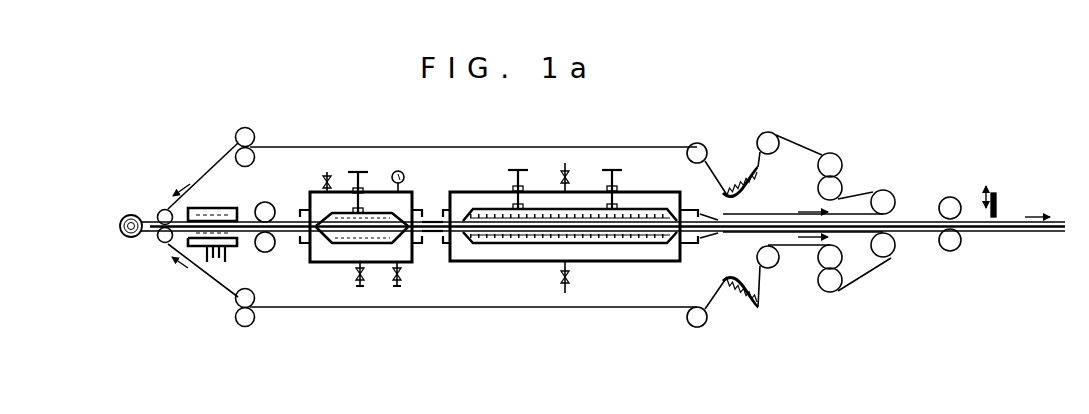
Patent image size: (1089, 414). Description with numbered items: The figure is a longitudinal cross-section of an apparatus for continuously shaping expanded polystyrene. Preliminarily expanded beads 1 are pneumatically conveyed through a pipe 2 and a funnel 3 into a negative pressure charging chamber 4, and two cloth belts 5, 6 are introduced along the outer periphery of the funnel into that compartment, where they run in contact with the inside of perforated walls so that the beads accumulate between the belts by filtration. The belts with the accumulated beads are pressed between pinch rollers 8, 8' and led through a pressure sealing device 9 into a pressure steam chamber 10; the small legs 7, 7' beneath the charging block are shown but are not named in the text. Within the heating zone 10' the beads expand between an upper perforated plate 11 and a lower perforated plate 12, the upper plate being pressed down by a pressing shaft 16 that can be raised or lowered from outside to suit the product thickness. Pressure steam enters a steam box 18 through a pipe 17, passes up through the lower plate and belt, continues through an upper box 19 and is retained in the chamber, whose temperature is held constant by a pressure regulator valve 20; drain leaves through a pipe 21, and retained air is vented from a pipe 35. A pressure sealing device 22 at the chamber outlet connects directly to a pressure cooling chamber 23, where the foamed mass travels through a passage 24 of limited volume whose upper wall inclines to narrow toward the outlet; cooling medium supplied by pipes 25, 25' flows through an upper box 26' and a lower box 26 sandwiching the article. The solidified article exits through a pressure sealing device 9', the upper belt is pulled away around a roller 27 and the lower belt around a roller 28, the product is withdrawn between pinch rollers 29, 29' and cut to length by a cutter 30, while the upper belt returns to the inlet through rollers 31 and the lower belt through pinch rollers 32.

The preliminarily expanded beads 1 is at (131, 205).
The pipe 2 is at (122, 247).
The funnel 3 is at (155, 248).
The negative pressure charging chamber 4 is at (212, 210).
The cloth belt 5 is at (203, 283).
The cloth belt 6 is at (203, 166).
The support leg 7 is at (232, 267).
The support leg 7' is at (223, 220).
The pinch roller 8 is at (267, 261).
The pinch roller 8' is at (271, 196).
The pressure sealing device 9 is at (301, 260).
The pressure sealing device 9' is at (709, 253).
The pressure steam chamber 10 is at (361, 183).
The heating zone 10' is at (357, 304).
The upper perforated plate 11 is at (377, 165).
The lower perforated plate 12 is at (377, 292).
The pressing shaft 16 is at (373, 158).
The pipe 17 is at (343, 286).
The steam box 18 is at (450, 289).
The upper box 19 is at (445, 173).
The pressure regulator valve 20 is at (417, 169).
The pipe 21 is at (418, 286).
The pressure sealing device 22 is at (469, 260).
The pressure cooling chamber 23 is at (565, 182).
The passage 24 is at (570, 263).
The pipe 25 is at (583, 169).
The pipe 25' is at (588, 285).
The lower box 26 is at (570, 294).
The upper box 26' is at (570, 162).
The roller 27 is at (902, 176).
The roller 28 is at (900, 273).
The pinch roller 29 is at (957, 262).
The pinch roller 29' is at (959, 189).
The cutter 30 is at (1019, 188).
The rollers 31 is at (268, 135).
The pinch rollers 32 is at (268, 320).
The pipe 35 is at (312, 169).